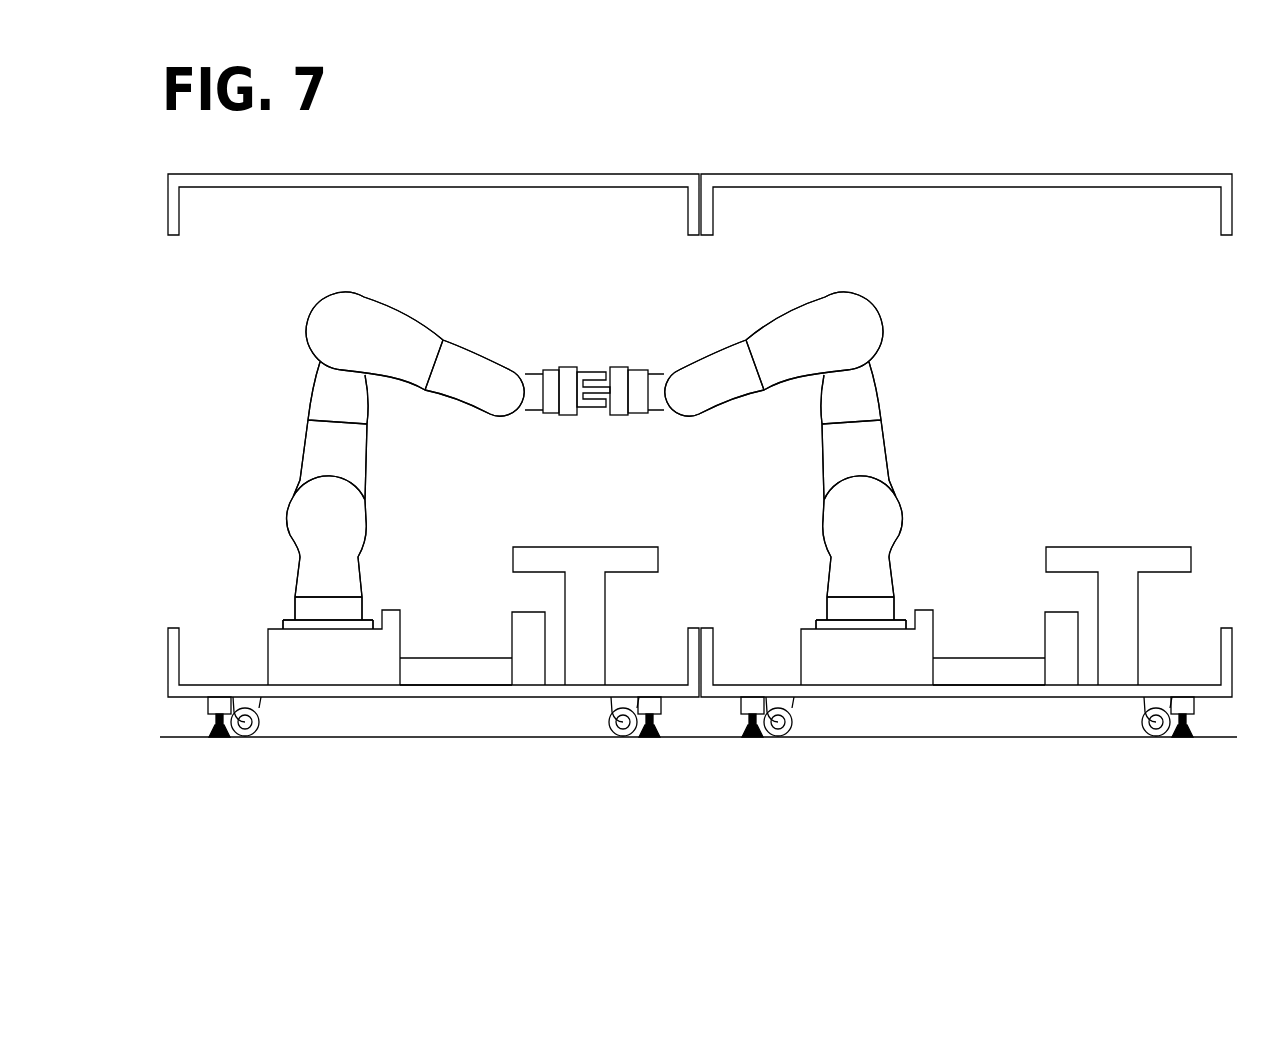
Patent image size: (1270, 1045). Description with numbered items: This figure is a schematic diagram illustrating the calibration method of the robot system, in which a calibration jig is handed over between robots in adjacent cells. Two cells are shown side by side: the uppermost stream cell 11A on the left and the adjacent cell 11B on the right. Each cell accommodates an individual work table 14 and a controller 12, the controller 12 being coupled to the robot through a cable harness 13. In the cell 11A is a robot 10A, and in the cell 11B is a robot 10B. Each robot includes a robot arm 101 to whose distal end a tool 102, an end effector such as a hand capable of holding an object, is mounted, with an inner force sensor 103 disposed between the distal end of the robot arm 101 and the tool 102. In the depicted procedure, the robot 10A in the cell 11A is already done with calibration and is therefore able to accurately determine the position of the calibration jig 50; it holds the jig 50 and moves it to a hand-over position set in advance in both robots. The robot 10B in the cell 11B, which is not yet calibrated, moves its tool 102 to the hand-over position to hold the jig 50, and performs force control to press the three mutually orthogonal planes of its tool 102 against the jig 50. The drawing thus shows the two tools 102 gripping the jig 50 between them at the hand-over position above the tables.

The uppermost stream cell 11A is at (519, 170).
The cell adjacent to the uppermost stream cell 11B is at (995, 170).
The robot 10A is at (479, 299).
The robot 10B is at (808, 299).
The robot arm 101 is at (292, 471).
The tool 102 is at (573, 415).
The inner force sensor 103 is at (552, 370).
The calibration jig 50 is at (594, 380).
The controller 12 is at (523, 612).
The cable harness 13 is at (442, 658).
The work table 14 is at (625, 547).